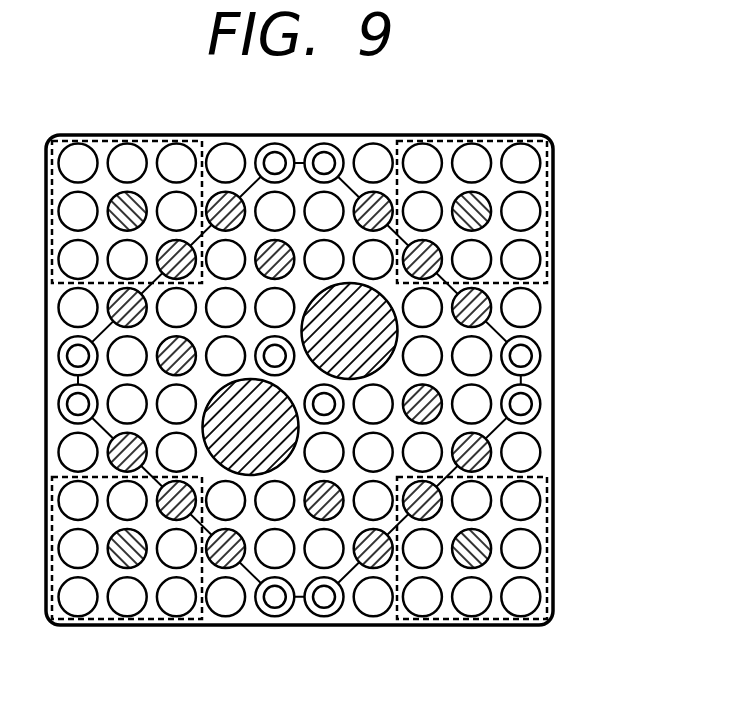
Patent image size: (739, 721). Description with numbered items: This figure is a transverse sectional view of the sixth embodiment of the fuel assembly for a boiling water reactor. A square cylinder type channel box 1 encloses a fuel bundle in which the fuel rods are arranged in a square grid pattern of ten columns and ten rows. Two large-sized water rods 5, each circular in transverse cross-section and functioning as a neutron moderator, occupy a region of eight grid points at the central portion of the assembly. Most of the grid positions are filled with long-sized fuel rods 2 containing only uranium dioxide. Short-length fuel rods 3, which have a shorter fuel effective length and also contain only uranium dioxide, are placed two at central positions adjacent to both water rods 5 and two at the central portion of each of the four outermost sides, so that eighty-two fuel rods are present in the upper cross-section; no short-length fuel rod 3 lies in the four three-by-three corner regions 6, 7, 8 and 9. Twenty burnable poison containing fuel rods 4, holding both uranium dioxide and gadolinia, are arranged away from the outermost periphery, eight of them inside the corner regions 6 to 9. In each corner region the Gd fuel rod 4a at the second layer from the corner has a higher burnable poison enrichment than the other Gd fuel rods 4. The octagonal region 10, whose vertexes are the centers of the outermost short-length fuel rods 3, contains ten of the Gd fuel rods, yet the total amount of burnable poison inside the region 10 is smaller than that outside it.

The channel box 1 is at (553, 200).
The fuel rod 2 is at (521, 308).
The short-length fuel rod 3 is at (521, 356).
The burnable poison containing fuel rod 4 is at (472, 447).
The Gd fuel rod 4a is at (480, 549).
The large-sized water rod 5 is at (268, 472).
The 3×3 corner region 6 is at (100, 141).
The 3×3 corner region 7 is at (410, 621).
The 3×3 corner region 8 is at (452, 147).
The 3×3 corner region 9 is at (197, 613).
The octagonal region 10 is at (348, 186).